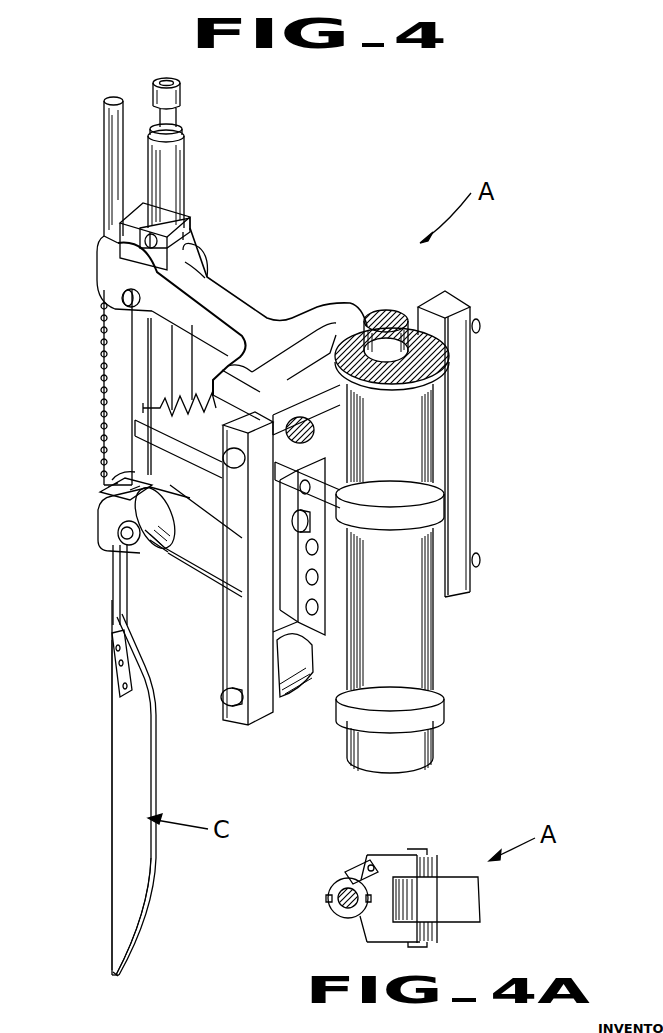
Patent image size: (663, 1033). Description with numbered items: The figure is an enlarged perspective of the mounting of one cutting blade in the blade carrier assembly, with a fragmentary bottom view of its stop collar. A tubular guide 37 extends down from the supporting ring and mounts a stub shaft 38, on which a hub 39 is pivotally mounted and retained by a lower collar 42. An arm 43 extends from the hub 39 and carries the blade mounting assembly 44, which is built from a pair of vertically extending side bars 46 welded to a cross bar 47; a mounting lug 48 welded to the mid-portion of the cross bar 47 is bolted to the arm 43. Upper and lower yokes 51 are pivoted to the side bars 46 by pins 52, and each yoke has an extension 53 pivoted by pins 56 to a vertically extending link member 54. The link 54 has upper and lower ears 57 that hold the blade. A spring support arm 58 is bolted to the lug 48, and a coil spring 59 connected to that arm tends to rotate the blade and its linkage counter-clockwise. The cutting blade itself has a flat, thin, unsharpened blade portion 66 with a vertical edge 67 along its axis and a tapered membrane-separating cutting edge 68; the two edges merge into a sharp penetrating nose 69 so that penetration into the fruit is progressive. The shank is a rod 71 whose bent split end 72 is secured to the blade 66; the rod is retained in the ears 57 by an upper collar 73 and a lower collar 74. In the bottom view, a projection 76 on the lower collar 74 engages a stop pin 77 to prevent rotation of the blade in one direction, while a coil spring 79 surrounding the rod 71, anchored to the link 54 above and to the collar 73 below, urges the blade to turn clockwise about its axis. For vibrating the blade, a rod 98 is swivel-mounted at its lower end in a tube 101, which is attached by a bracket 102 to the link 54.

In FIG. 4, the tubular guide 37 is at (393, 414).
In FIG. 4, the stub shaft 38 is at (389, 316).
In FIG. 4, the hub 39 is at (397, 650).
In FIG. 4, the lower collar 42 is at (397, 758).
In FIG. 4, the arm 43 is at (346, 462).
In FIG. 4, the blade mounting assembly 44 is at (478, 381).
In FIG. 4, the side bar 46 is at (478, 547).
In FIG. 4, the cross bar 47 is at (330, 400).
In FIG. 4, the mounting lug 48 is at (322, 558).
In FIG. 4, the yoke 51 is at (320, 313).
In FIG. 4, the pin 52 is at (240, 445).
In FIG. 4, the extension 53 is at (238, 315).
In FIG. 4A, the extension 53 is at (470, 897).
In FIG. 4, the link member 54 is at (120, 224).
In FIG. 4, the pin 56 is at (121, 296).
In FIG. 4A, the pin 56 is at (411, 852).
In FIG. 4, the ear 57 is at (106, 248).
In FIG. 4A, the ear 57 is at (368, 928).
In FIG. 4, the spring support arm 58 is at (157, 440).
In FIG. 4, the coil spring 59 is at (233, 389).
In FIG. 4, the blade 66 is at (122, 785).
In FIG. 4, the vertical edge 67 is at (112, 760).
In FIG. 4, the tapered cutting edge 68 is at (134, 908).
In FIG. 4, the penetrating nose 69 is at (118, 973).
In FIG. 4, the rod 71 is at (107, 113).
In FIG. 4A, the rod 71 is at (342, 904).
In FIG. 4, the bent split end 72 is at (118, 663).
In FIG. 4, the upper collar 73 is at (110, 485).
In FIG. 4A, the lower collar 74 is at (342, 914).
In FIG. 4A, the projection 76 is at (356, 875).
In FIG. 4A, the stop pin 77 is at (366, 868).
In FIG. 4, the coil spring 79 is at (103, 395).
In FIG. 4, the rod 98 is at (182, 97).
In FIG. 4, the tube 101 is at (181, 170).
In FIG. 4, the bracket 102 is at (165, 250).